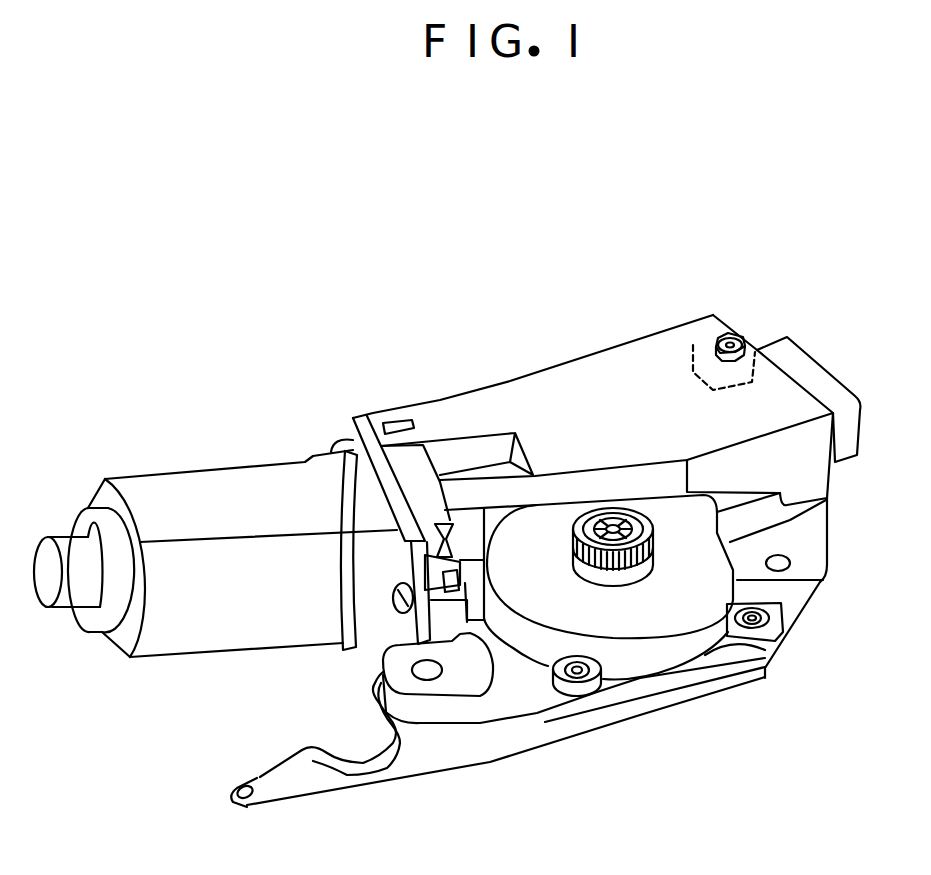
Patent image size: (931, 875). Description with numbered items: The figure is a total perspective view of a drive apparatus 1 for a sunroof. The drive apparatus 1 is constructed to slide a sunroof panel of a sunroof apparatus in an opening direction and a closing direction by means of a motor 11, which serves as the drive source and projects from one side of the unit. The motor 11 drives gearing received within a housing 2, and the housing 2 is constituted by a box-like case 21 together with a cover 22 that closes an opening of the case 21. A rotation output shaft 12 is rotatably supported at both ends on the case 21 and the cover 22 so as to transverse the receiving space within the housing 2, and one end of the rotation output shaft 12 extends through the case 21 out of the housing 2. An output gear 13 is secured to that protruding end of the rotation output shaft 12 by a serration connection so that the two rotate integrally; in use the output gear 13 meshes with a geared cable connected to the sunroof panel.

The drive apparatus 1 is at (835, 622).
The housing 2 is at (626, 424).
The motor 11 is at (227, 485).
The rotation output shaft 12 is at (612, 527).
The output gear 13 is at (618, 567).
The case 21 is at (583, 383).
The cover 22 is at (800, 519).